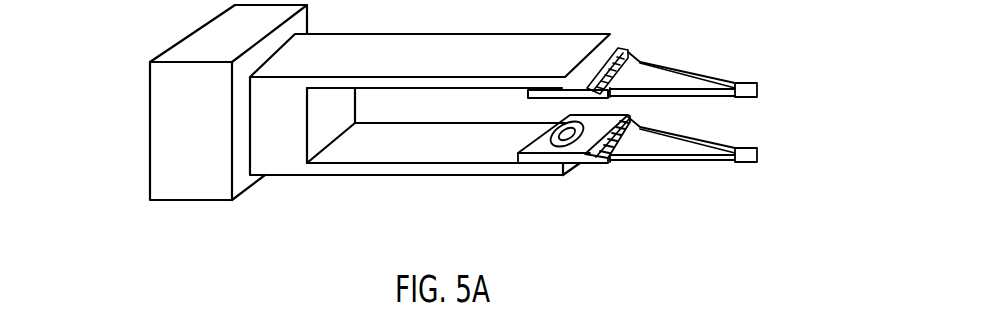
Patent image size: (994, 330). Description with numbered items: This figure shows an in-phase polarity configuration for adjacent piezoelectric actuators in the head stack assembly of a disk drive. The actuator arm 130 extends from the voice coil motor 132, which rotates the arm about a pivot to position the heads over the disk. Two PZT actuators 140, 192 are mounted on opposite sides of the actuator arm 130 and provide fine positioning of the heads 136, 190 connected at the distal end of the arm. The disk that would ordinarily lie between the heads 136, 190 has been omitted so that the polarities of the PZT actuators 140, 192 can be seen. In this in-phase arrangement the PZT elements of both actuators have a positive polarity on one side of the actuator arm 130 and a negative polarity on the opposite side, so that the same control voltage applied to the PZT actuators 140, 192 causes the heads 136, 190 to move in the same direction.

The actuator arm 130 is at (390, 33).
The voice coil motor 132 is at (141, 127).
The head 136 is at (757, 78).
The PZT actuator 140 is at (620, 43).
The head 190 is at (757, 165).
The PZT actuator 192 is at (578, 167).